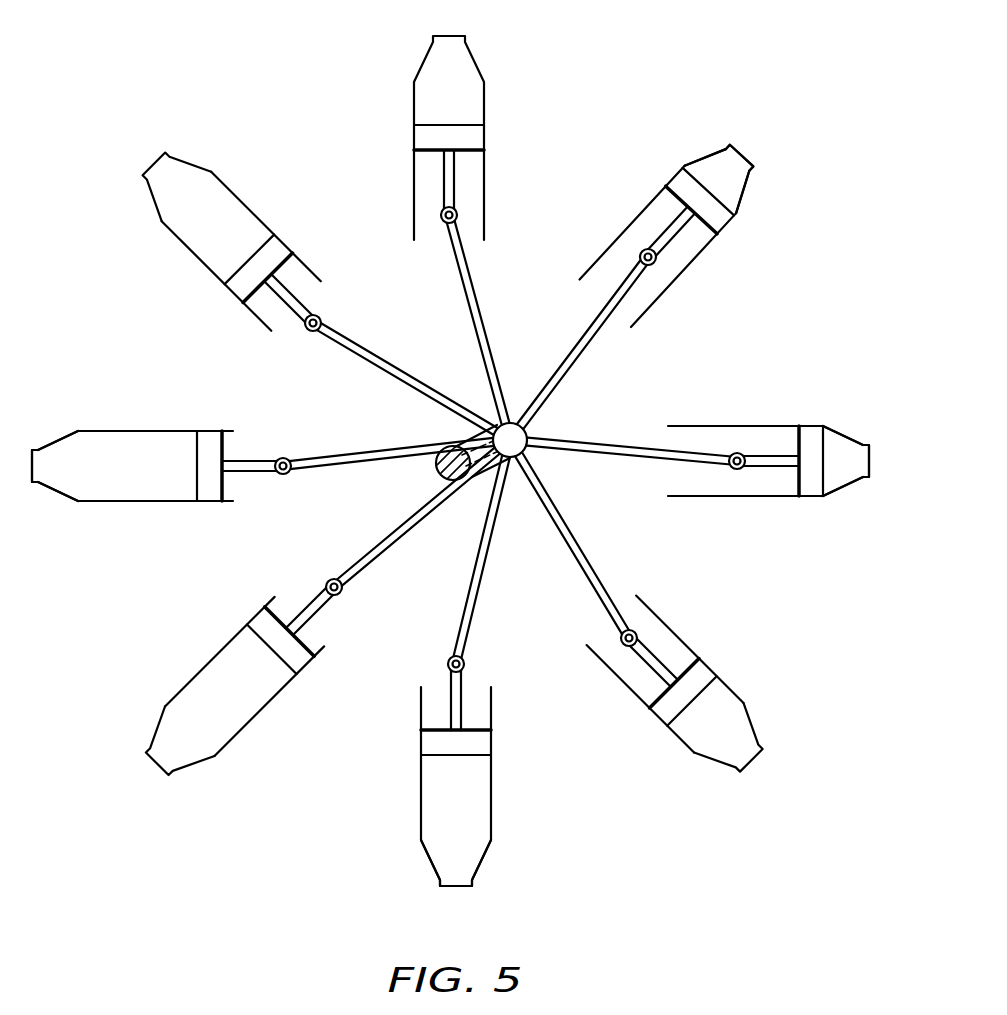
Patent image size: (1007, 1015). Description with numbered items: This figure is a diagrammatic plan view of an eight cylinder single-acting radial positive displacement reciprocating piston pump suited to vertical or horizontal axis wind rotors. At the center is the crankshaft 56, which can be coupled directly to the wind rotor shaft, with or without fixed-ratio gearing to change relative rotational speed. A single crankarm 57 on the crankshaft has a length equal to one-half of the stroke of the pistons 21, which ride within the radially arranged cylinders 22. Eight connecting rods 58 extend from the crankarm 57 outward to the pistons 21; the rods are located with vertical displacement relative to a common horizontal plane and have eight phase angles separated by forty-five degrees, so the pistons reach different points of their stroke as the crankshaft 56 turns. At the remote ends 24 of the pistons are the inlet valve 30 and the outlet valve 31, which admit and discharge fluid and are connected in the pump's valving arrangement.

The piston 21 is at (488, 142).
The cylinder 22 is at (413, 176).
The remote end 24 is at (428, 30).
The inlet valve 30 is at (700, 165).
The outlet valve 31 is at (750, 195).
The crankshaft 56 is at (437, 473).
The crankarm 57 is at (480, 430).
The connecting rod 58 is at (472, 278).